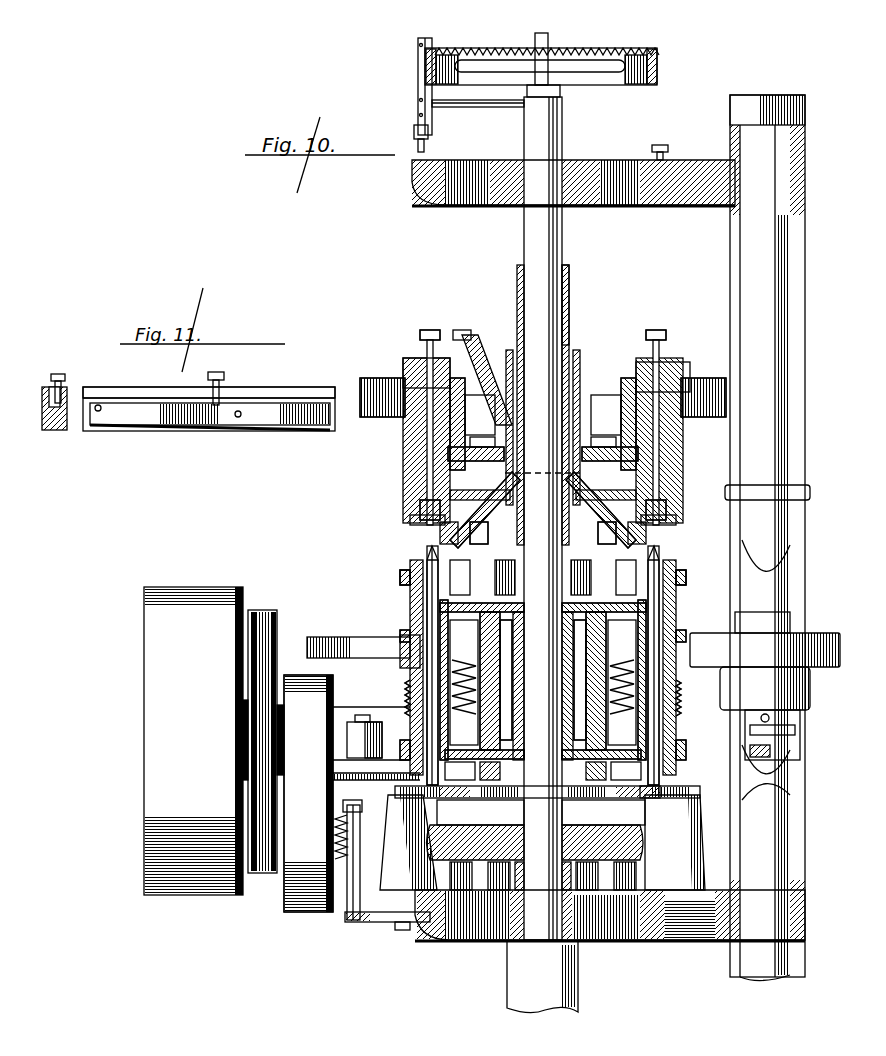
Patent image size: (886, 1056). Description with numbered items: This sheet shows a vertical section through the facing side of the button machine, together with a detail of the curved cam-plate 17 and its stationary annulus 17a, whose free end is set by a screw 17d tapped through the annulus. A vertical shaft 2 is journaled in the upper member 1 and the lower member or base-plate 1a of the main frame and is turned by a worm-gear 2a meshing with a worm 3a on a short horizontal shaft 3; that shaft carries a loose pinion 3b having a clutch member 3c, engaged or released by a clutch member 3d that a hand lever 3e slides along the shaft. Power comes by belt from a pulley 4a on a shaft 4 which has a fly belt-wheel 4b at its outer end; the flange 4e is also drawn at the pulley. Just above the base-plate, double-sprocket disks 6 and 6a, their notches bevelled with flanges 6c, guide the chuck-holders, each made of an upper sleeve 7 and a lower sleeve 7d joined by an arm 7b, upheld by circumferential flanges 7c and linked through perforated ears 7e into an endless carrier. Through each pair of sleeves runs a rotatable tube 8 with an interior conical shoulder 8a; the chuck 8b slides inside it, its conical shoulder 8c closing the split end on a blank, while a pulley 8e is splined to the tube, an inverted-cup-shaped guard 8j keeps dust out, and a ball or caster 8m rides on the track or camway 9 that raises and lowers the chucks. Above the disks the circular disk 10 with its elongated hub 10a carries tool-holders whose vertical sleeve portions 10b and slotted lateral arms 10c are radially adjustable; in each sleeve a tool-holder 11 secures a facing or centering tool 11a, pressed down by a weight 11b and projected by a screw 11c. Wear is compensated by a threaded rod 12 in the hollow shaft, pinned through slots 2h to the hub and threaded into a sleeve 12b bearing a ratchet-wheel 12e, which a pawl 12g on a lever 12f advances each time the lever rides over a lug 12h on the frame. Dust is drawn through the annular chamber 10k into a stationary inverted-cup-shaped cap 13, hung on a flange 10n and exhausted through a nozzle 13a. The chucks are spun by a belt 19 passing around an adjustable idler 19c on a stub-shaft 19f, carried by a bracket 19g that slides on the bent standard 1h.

In FIG. 10, the upper member of the main frame 1 is at (700, 162).
In FIG. 10, the lower member of the main frame 1a is at (705, 942).
In FIG. 10, the standard of the main frame 1h is at (797, 480).
In FIG. 10, the vertical shaft 2 is at (566, 233).
In FIG. 10, the worm-gear 2a is at (640, 846).
In FIG. 10, the slots in the sides of shaft 2h is at (495, 107).
In FIG. 10, the short horizontal shaft 3 is at (425, 840).
In FIG. 10, the worm 3a is at (500, 880).
In FIG. 10, the loose pinion 3b is at (310, 912).
In FIG. 10, the clutch member 3c is at (340, 825).
In FIG. 10, the clutch member 3d is at (372, 825).
In FIG. 10, the lever 3e is at (350, 922).
In FIG. 10, the shaft 4 is at (240, 742).
In FIG. 10, the pulley 4a is at (320, 700).
In FIG. 10, the fly belt-wheel 4b is at (143, 682).
In FIG. 10, the pulley 4e is at (262, 612).
In FIG. 10, the double-sprocket disk 6 is at (440, 608).
In FIG. 10, the double-sprocket disk 6a is at (585, 760).
In FIG. 10, the bevel flange 6c is at (543, 539).
In FIG. 10, the upper sleeve 7 is at (410, 600).
In FIG. 10, the arm 7b is at (505, 600).
In FIG. 10, the circumferential flange 7c is at (678, 602).
In FIG. 10, the lower sleeve 7d is at (402, 745).
In FIG. 10, the perforated ear 7e is at (678, 622).
In FIG. 10, the rotatable tube 8 is at (410, 628).
In FIG. 10, the interior conical shoulder 8a is at (420, 520).
In FIG. 10, the chuck 8b is at (430, 688).
In FIG. 10, the conical shoulder 8c is at (410, 565).
In FIG. 10, the pulley 8e is at (688, 636).
In FIG. 10, the inverted-cup-shaped guard 8j is at (400, 578).
In FIG. 10, the ball or caster 8m is at (660, 788).
In FIG. 10, the track or camway 9 is at (690, 792).
In FIG. 10, the circular disk 10 is at (683, 446).
In FIG. 10, the elongated hub 10a is at (572, 330).
In FIG. 10, the vertical sleeve portion 10b is at (404, 415).
In FIG. 10, the slotted lateral arm 10c is at (448, 460).
In FIG. 10, the annular depression or chamber 10k is at (598, 510).
In FIG. 10, the flange 10n is at (486, 510).
In FIG. 10, the tool-holder 11 is at (405, 486).
In FIG. 10, the facing or centering tool 11a is at (410, 508).
In FIG. 10, the weight 11b is at (410, 360).
In FIG. 10, the screw 11c is at (432, 330).
In FIG. 10, the threaded rod 12 is at (568, 44).
In FIG. 10, the sleeve 12b is at (552, 50).
In FIG. 10, the ratchet-wheel 12e is at (660, 62).
In FIG. 10, the lever 12f is at (418, 90).
In FIG. 10, the pawl 12g is at (438, 50).
In FIG. 10, the lug 12h is at (661, 145).
In FIG. 10, the stationary inverted-cup-shaped cap 13 is at (580, 355).
In FIG. 10, the nozzle 13a is at (472, 334).
In FIG. 11, the curved cam-plate 17 is at (55, 430).
In FIG. 11, the stationary annulus 17a is at (209, 382).
In FIG. 11, the screw 17d is at (60, 375).
In FIG. 10, the belt 19 is at (570, 673).
In FIG. 10, the adjustable idler 19c is at (760, 632).
In FIG. 10, the stub-shaft 19f is at (808, 633).
In FIG. 10, the bracket 19g is at (790, 736).